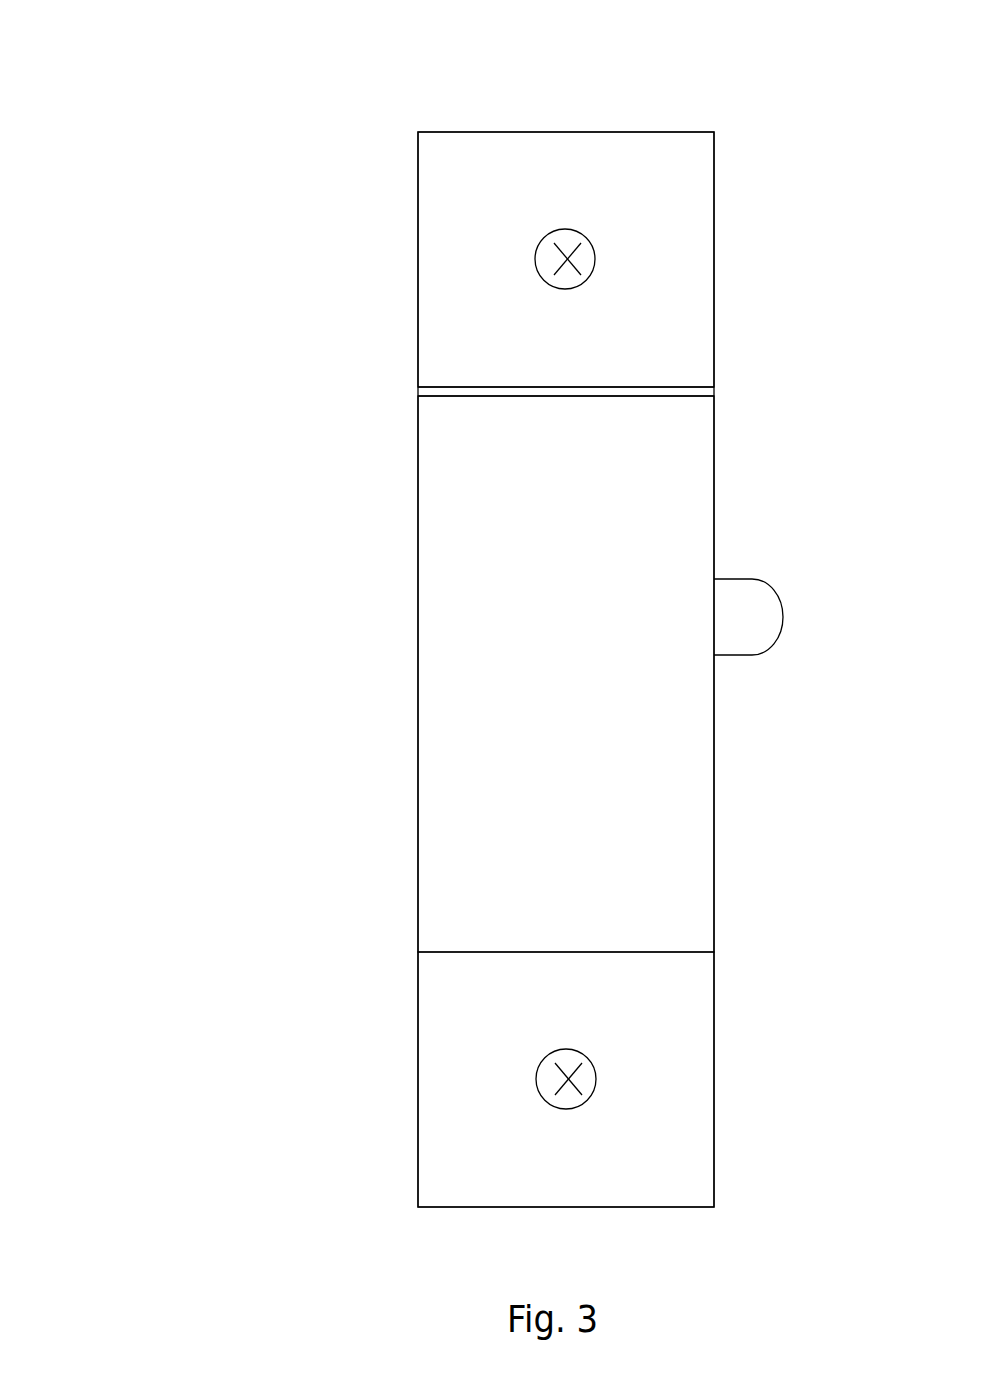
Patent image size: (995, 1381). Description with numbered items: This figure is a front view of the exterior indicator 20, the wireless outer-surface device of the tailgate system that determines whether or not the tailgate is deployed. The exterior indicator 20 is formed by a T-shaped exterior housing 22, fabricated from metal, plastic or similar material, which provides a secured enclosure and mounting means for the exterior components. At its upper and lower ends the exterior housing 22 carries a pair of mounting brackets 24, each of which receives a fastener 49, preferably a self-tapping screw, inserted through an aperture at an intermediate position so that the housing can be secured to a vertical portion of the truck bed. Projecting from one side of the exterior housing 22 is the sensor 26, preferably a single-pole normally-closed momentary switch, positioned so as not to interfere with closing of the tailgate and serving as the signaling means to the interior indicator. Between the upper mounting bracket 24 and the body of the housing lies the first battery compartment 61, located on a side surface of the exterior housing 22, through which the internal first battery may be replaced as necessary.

The exterior indicator 20 is at (160, 102).
The exterior housing 22 is at (505, 643).
The mounting bracket 24 is at (440, 193).
The sensor 26 is at (758, 617).
The fastener 49 is at (582, 259).
The first battery compartment 61 is at (700, 391).